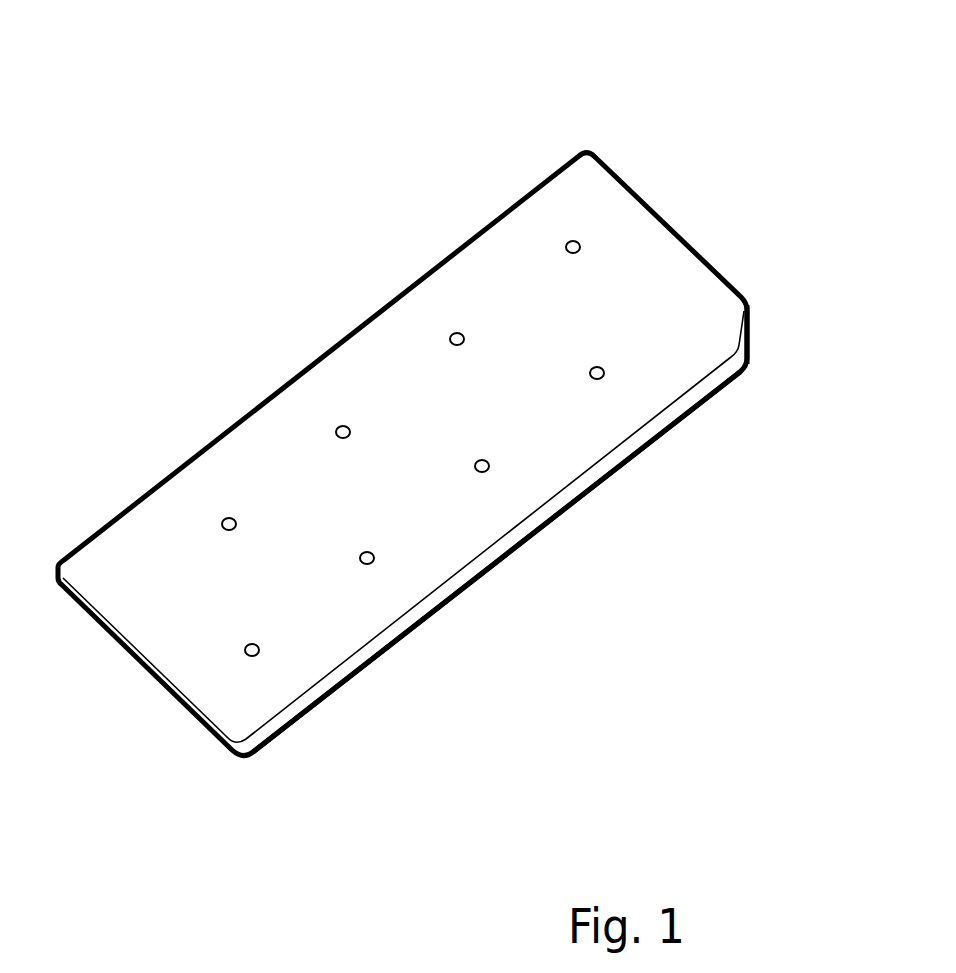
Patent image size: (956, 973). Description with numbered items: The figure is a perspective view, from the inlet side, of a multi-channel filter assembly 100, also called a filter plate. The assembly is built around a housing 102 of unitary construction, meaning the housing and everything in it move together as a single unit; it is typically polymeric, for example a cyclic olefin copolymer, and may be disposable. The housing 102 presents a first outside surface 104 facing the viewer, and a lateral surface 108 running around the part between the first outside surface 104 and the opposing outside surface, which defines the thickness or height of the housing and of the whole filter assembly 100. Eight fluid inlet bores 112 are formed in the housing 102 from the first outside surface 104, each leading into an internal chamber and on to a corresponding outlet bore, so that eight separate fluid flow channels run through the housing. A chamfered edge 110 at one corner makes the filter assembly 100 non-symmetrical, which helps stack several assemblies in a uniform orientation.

The multi-channel filter assembly 100 is at (437, 402).
The housing 102 is at (112, 473).
The first outside surface 104 is at (647, 245).
The lateral surface 108 is at (328, 688).
The chamfered edge 110 is at (748, 337).
The fluid inlet bores 112 is at (565, 248).